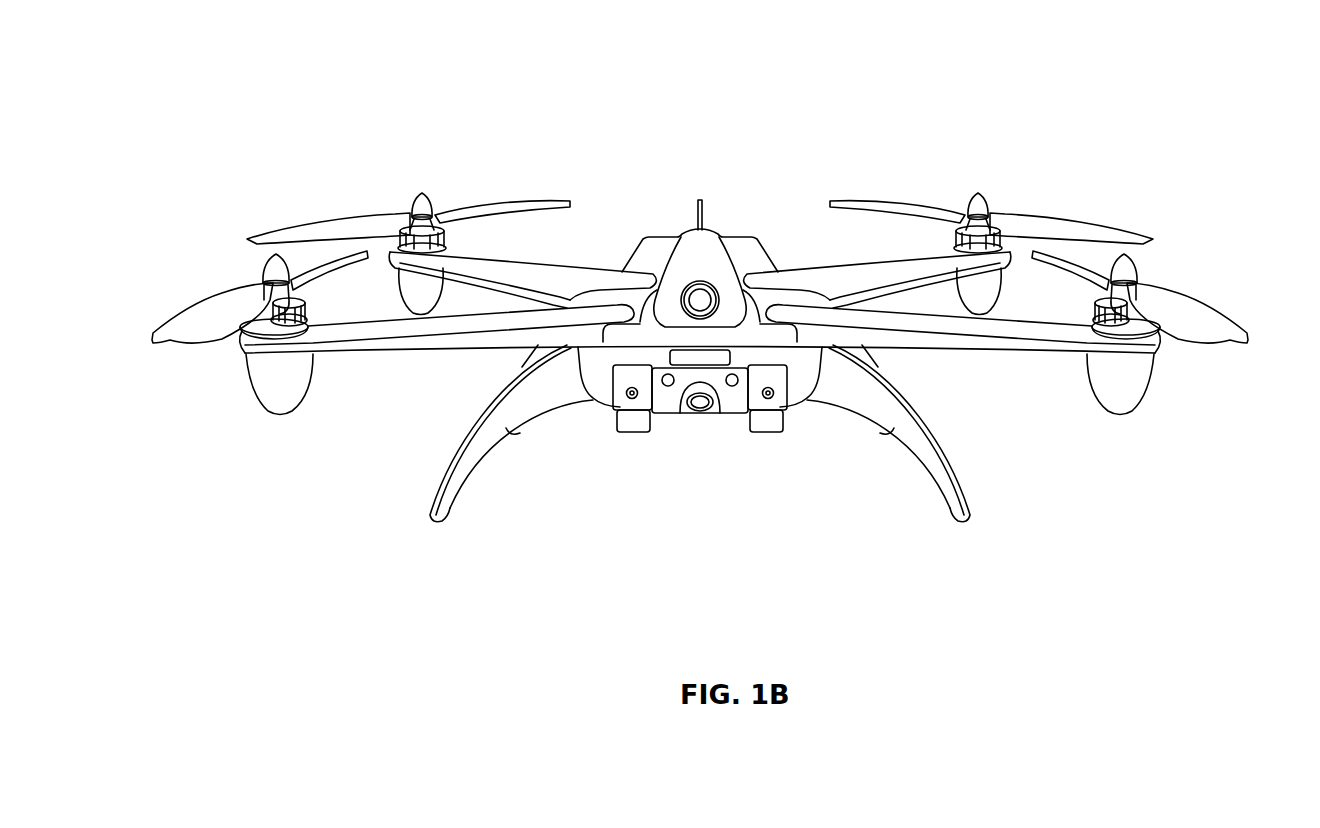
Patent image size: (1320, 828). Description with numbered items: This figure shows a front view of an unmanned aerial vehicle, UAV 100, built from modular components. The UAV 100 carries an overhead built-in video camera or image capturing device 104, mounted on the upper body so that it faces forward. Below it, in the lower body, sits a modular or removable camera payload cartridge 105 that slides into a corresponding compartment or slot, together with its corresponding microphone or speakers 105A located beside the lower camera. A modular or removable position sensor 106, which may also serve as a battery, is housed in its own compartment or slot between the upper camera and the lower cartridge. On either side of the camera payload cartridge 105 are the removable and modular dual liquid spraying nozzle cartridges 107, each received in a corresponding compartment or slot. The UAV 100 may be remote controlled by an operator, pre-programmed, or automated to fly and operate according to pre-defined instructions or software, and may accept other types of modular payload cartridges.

The unmanned aerial vehicle 100 is at (1003, 114).
The overhead built-in video camera 104 is at (702, 294).
The modular camera payload cartridge 105 is at (704, 396).
The microphone or speakers 105A is at (666, 375).
The modular position sensor 106 is at (685, 358).
The dual modular liquid spraying nozzles cartridges 107 is at (637, 398).